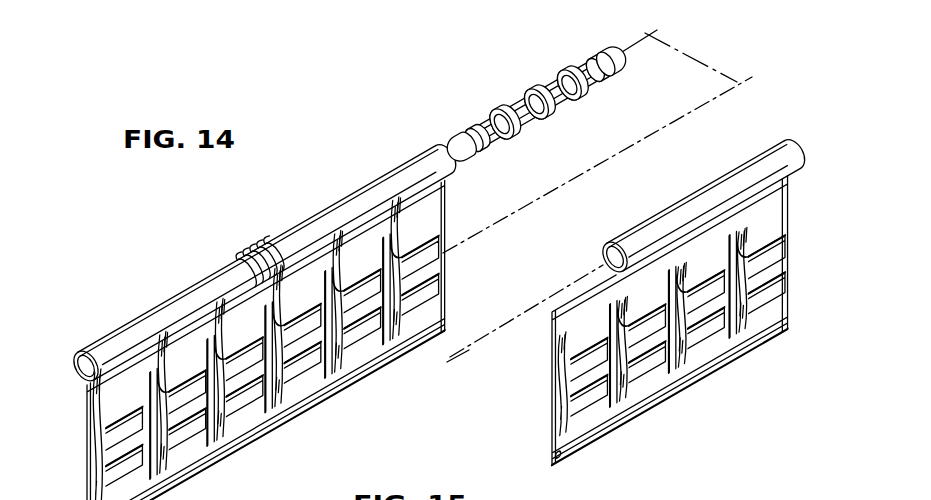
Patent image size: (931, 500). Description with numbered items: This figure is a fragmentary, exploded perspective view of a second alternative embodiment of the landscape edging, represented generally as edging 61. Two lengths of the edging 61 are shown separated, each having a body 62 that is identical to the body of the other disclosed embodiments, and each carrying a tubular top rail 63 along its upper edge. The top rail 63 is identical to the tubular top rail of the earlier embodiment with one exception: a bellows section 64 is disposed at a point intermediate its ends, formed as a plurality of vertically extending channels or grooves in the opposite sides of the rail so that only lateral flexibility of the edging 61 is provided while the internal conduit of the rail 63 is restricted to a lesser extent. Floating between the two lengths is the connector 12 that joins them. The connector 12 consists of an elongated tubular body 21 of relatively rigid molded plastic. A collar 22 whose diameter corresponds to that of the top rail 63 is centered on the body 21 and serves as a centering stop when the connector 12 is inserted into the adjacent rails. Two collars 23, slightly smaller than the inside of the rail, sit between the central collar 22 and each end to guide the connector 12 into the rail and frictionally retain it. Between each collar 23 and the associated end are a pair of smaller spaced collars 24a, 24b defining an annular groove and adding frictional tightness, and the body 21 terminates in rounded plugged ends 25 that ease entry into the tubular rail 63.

The connector 12 is at (546, 131).
The elongated tubular body 21 is at (509, 96).
The collar 22 is at (540, 117).
The collars 23 is at (507, 130).
The smaller spaced collar 24a is at (592, 55).
The smaller spaced collar 24b is at (471, 132).
The plugged ends 25 is at (458, 162).
The landscape edging 61 is at (439, 284).
The body 62 is at (362, 368).
The top rail 63 is at (333, 200).
The bellows section 64 is at (243, 248).